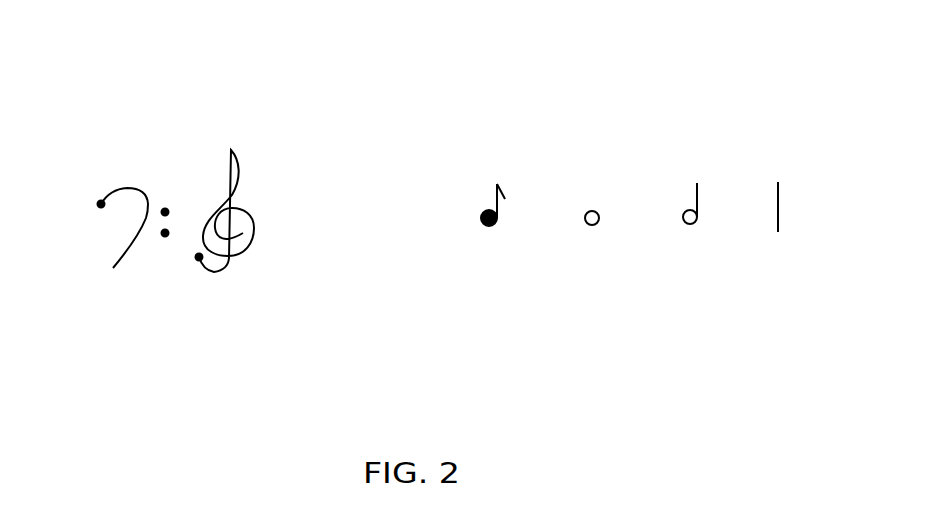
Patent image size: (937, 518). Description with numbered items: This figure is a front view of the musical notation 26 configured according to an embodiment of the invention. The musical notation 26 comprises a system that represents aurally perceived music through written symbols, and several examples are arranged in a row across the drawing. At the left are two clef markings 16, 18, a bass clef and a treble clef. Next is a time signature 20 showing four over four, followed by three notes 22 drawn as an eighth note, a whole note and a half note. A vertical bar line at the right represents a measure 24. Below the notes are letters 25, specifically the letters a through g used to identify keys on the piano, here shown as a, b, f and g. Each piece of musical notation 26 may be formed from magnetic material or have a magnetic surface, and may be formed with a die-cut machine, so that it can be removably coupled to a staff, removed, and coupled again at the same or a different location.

The clef marking 16 is at (95, 267).
The clef marking 18 is at (210, 282).
The time signature 20 is at (380, 238).
The notes 22 is at (478, 232).
The measure 24 is at (793, 178).
The letters 25 is at (517, 360).
The musical notation 26 is at (814, 96).